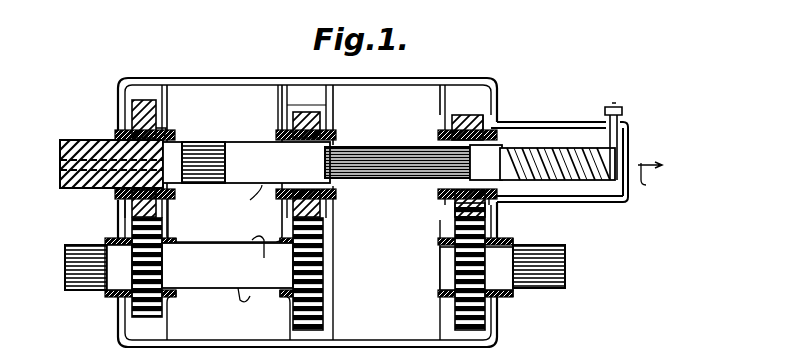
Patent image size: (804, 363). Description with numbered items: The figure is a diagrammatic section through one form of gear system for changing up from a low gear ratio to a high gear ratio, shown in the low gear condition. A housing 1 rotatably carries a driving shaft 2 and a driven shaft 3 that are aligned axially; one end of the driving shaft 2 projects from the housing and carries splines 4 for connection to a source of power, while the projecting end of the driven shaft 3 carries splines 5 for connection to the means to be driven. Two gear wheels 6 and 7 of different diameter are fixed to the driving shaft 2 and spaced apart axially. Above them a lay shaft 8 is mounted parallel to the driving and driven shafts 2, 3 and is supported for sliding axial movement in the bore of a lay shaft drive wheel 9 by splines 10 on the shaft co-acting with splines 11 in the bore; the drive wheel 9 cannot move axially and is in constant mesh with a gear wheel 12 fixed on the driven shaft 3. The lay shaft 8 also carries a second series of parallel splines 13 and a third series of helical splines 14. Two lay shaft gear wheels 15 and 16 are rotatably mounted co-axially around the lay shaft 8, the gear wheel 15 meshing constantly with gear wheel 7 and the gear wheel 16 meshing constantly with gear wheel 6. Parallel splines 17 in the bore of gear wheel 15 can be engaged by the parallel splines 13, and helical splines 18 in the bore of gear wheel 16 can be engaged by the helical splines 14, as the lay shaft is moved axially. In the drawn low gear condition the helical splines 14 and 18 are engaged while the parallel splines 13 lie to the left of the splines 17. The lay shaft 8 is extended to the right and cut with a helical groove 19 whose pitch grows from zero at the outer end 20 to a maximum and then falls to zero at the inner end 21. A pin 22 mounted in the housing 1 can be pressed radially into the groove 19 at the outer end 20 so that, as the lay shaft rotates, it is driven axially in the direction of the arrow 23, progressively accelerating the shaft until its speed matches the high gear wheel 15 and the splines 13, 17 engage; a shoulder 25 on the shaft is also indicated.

The housing 1 is at (233, 80).
The driving shaft 2 is at (227, 269).
The driven shaft 3 is at (500, 275).
The splines 4 is at (90, 290).
The splines 5 is at (555, 290).
The gear wheel 6 is at (162, 300).
The gear wheel 7 is at (293, 303).
The lay shaft 8 is at (230, 184).
The lay shaft drive wheel 9 is at (452, 212).
The splines 10 is at (397, 150).
The splines 11 is at (492, 120).
The gear wheel 12 is at (444, 270).
The second series of splines 13 is at (214, 142).
The third series of splines 14 is at (90, 182).
The lay shaft gear wheel 15 is at (322, 122).
The lay shaft gear wheel 16 is at (158, 110).
The splines 17 is at (300, 140).
The splines 18 is at (172, 133).
The helical groove 19 is at (568, 185).
The outer end 20 is at (640, 170).
The inner end 21 is at (512, 165).
The pin 22 is at (621, 144).
The arrow 23 is at (650, 183).
The shaft shoulder 25 is at (262, 186).